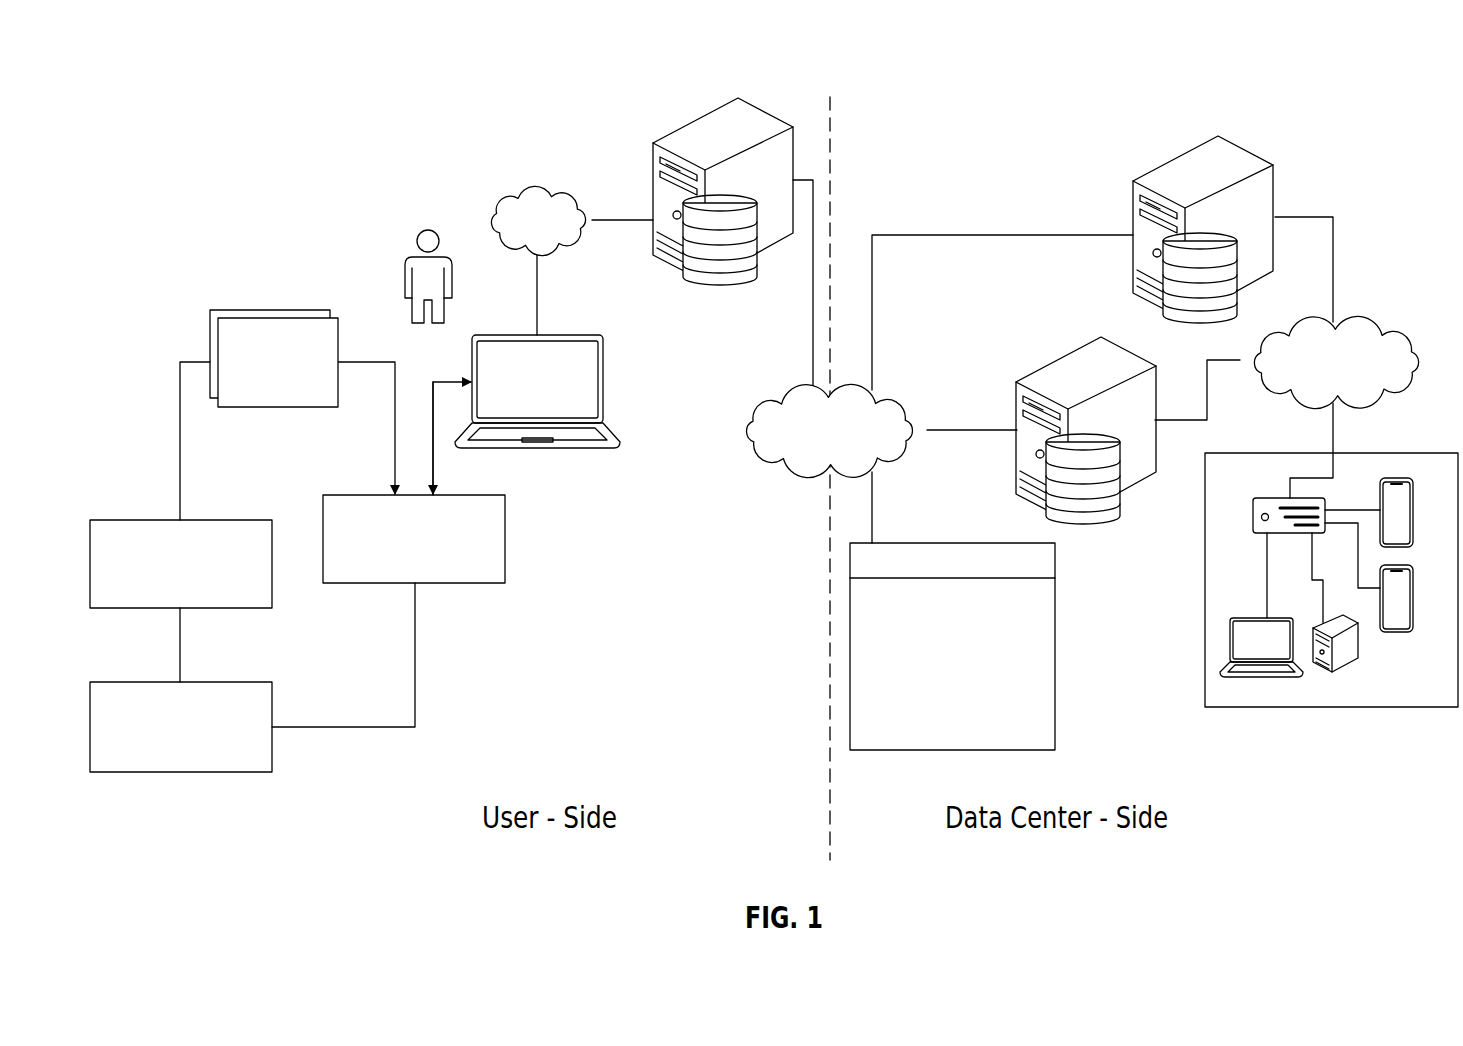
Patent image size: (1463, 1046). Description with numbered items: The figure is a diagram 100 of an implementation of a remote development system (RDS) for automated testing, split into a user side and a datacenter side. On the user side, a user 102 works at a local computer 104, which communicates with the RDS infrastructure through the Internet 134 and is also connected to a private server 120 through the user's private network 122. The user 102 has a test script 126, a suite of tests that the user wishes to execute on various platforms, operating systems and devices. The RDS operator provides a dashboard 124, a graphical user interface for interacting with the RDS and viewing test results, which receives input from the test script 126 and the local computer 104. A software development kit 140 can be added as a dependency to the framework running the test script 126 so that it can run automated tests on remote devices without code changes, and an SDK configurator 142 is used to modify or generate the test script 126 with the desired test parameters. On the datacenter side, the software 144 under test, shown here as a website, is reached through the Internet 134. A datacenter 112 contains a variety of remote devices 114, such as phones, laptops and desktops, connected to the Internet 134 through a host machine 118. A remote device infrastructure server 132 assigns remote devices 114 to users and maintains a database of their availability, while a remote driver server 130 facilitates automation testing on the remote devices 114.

The diagram 100 is at (189, 110).
The user 102 is at (404, 262).
The local computer 104 is at (605, 377).
The datacenter 112 is at (1397, 452).
The remote devices 114 is at (1228, 640).
The host machine 118 is at (1278, 498).
The private server 120 is at (697, 120).
The private network 122 is at (503, 200).
The dashboard 124 is at (443, 494).
The test script 126 is at (292, 310).
The remote driver server 130 is at (1081, 351).
The remote device infrastructure server 132 is at (1277, 192).
The Internet 134 is at (882, 397).
The software development kit 140 is at (207, 519).
The SDK configurator 142 is at (207, 682).
The software 144 is at (1058, 700).